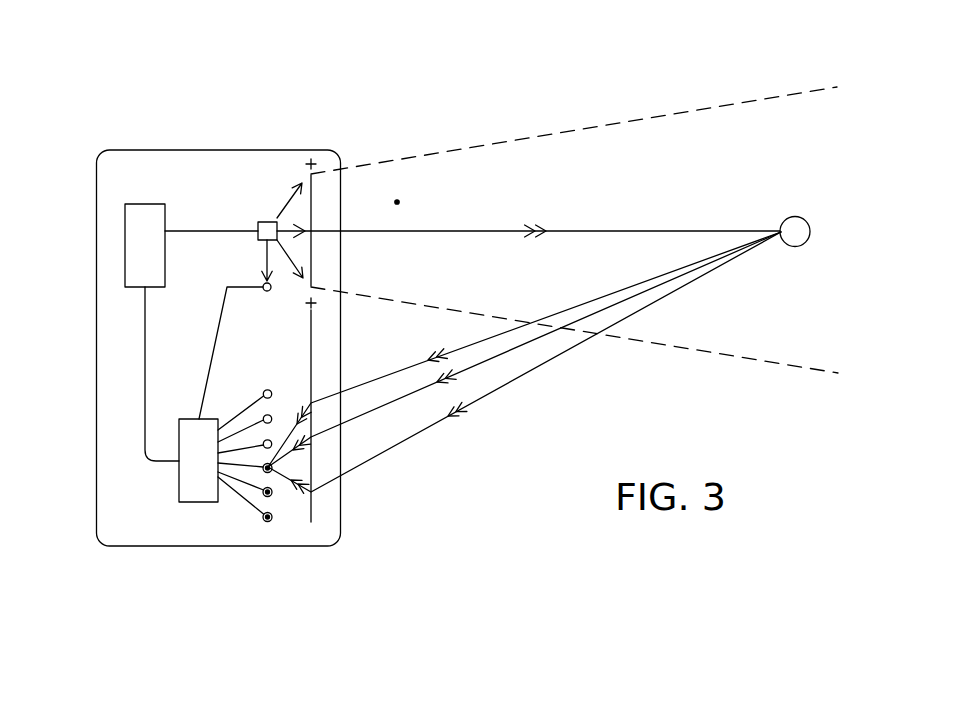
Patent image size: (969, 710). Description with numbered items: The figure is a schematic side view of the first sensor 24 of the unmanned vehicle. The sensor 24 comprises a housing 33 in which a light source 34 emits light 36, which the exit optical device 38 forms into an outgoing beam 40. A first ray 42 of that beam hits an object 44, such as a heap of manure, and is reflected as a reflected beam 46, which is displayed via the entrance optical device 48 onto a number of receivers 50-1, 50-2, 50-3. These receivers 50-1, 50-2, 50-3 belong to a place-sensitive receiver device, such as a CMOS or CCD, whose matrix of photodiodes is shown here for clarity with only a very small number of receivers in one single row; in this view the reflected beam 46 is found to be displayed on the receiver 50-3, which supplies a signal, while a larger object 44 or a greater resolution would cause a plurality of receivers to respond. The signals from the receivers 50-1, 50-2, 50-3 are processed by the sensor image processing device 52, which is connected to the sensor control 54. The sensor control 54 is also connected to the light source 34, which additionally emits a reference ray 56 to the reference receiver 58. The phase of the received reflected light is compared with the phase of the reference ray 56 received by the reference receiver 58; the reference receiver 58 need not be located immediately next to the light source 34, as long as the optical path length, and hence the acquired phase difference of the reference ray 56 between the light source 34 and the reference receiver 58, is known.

The first sensor 24 is at (203, 568).
The housing 33 is at (96, 163).
The light source 34 is at (267, 229).
The light 36 is at (295, 211).
The exit optical device 38 is at (312, 206).
The outgoing beam 40 is at (397, 202).
The first ray 42 is at (477, 231).
The object 44 is at (796, 216).
The reflected beam 46 is at (594, 306).
The entrance optical device 48 is at (311, 508).
The receiver 50-1 is at (271, 519).
The receiver 50-2 is at (266, 496).
The receiver 50-3 is at (267, 472).
The sensor image processing device 52 is at (197, 473).
The sensor control 54 is at (134, 218).
The reference ray 56 is at (267, 260).
The reference receiver 58 is at (267, 291).